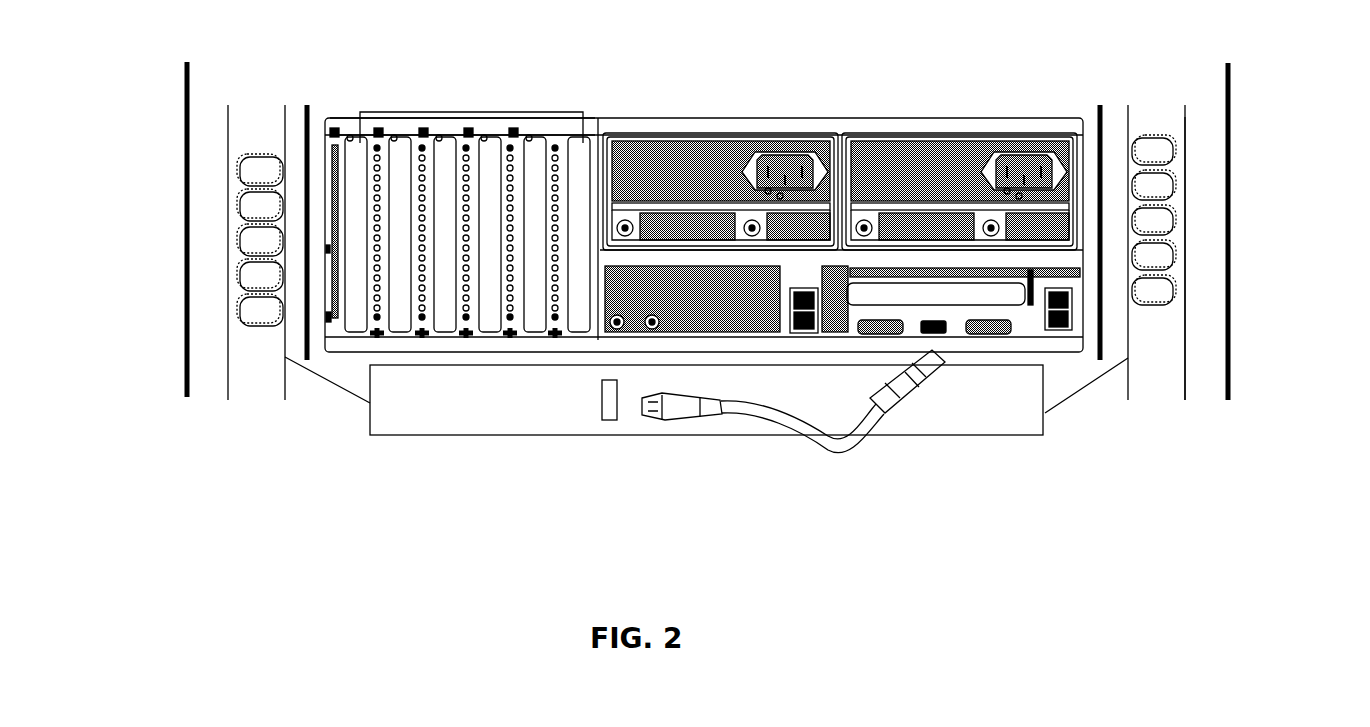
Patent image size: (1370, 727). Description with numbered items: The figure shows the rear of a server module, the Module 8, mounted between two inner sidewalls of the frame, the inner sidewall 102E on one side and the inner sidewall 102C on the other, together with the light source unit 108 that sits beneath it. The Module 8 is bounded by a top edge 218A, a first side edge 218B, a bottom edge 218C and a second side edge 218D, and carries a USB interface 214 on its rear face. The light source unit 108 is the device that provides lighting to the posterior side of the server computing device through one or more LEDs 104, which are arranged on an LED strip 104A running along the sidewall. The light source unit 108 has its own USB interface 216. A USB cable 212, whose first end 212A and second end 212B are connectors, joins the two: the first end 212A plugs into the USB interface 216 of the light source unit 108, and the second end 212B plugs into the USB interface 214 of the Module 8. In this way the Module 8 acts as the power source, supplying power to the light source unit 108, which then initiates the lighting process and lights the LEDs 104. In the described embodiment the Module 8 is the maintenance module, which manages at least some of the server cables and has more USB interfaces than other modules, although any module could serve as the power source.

The inner sidewall 102E is at (217, 224).
The inner sidewall 102C is at (1200, 218).
The LEDs 104 is at (1178, 150).
The LED strip 104A is at (1187, 117).
The light source unit 108 is at (445, 397).
The Module 8 is at (857, 118).
The top edge 218A is at (648, 132).
The first side edge 218B is at (1068, 258).
The bottom edge 218C is at (570, 342).
The second side edge 218D is at (330, 318).
The USB interface 214 is at (947, 335).
The USB interface 216 is at (610, 413).
The USB cable 212 is at (793, 441).
The first end 212A is at (685, 415).
The second end 212B is at (920, 396).